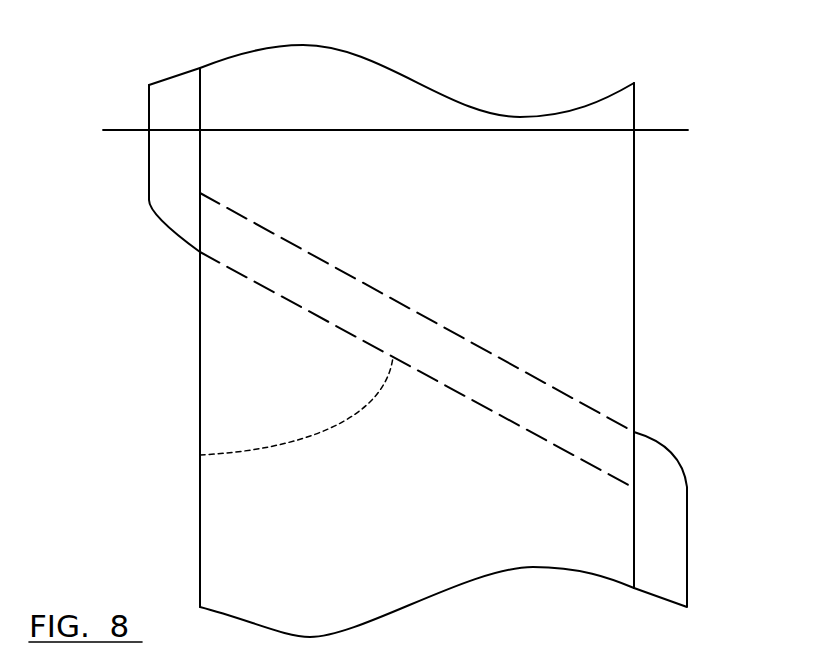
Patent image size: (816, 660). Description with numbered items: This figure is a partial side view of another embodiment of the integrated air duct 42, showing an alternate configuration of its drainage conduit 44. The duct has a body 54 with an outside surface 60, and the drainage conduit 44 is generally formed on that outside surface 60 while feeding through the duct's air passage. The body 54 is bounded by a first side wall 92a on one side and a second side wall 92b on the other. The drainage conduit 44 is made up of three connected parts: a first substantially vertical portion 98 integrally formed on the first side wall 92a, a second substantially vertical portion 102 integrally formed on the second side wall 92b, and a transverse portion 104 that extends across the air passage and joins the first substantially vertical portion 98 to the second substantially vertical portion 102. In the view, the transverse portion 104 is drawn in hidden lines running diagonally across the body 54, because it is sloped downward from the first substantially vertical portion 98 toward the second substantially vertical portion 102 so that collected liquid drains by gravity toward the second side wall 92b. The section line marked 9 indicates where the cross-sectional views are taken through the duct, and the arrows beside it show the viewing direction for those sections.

The section line 9- 9 is at (112, 190).
The integrated air duct 42 is at (741, 74).
The drainage conduit 44 is at (175, 213).
The body 54 is at (608, 257).
The outside surface 60 is at (200, 399).
The first side wall 92a is at (200, 503).
The second side wall 92b is at (633, 380).
The first substantially vertical portion 98 is at (173, 182).
The second substantially vertical portion 102 is at (665, 538).
The transverse portion 104 is at (200, 455).